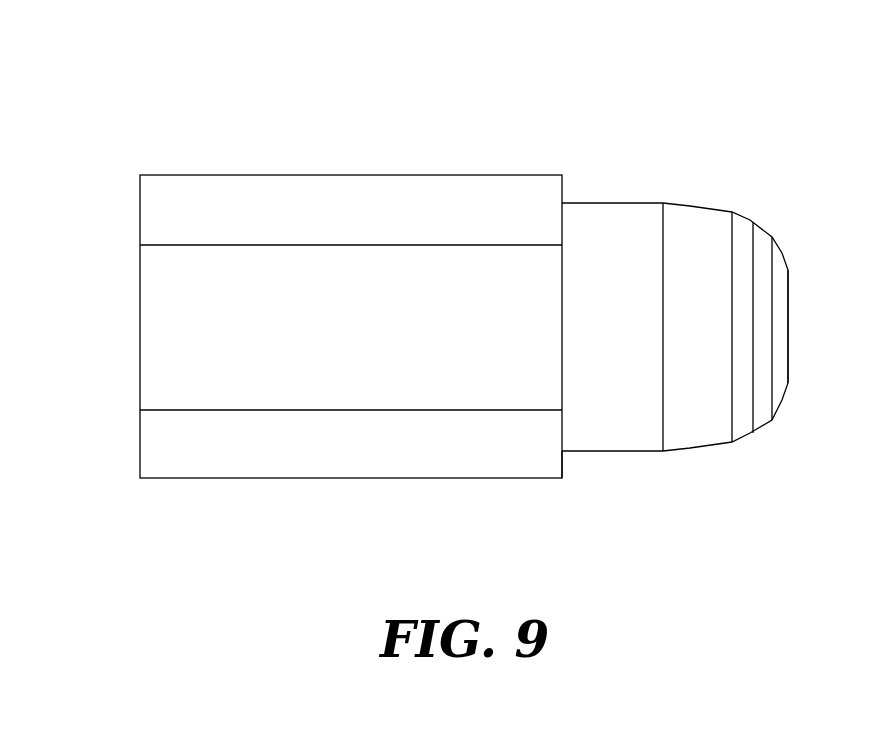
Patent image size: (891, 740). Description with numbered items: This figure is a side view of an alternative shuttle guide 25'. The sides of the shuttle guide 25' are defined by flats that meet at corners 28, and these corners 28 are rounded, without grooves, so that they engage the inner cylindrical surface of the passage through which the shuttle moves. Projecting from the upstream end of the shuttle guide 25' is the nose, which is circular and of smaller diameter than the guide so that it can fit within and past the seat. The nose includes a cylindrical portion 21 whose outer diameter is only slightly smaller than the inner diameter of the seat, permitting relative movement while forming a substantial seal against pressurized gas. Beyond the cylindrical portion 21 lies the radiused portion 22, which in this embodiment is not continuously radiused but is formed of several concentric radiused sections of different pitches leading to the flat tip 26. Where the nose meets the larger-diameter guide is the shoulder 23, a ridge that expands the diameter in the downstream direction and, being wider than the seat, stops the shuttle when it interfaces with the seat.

The alternative shuttle guide 25' is at (194, 62).
The corners 28 is at (531, 185).
The cylindrical portion 21 is at (616, 203).
The radiused portion 22 is at (747, 218).
The flat tip 26 is at (789, 328).
The shoulder 23 is at (565, 462).